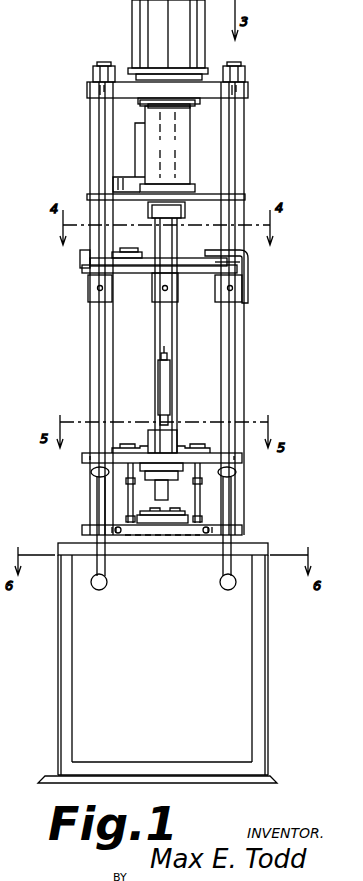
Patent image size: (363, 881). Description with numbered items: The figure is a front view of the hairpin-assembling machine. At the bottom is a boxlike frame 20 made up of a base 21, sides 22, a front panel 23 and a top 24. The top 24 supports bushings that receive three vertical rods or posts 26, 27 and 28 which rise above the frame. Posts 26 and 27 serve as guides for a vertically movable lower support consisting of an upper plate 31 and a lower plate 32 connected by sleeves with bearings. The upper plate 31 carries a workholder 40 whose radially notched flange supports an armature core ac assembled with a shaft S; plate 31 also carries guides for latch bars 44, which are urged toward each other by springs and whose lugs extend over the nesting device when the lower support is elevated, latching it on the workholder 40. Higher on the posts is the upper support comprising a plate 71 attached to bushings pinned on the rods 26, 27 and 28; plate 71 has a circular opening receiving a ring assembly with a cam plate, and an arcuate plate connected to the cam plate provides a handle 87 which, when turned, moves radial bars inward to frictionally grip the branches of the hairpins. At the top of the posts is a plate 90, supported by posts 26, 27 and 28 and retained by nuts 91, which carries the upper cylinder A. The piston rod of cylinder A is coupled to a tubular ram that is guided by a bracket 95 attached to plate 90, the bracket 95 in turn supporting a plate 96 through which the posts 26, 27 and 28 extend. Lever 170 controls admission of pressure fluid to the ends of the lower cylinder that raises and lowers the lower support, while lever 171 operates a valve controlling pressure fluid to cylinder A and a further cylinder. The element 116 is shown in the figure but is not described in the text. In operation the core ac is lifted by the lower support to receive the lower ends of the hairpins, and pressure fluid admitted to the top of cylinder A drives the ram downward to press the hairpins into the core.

The cylinder A is at (132, 13).
The plate 90 is at (87, 90).
The nuts 91 is at (93, 70).
The bracket 95 is at (188, 150).
The plate 96 is at (248, 196).
The lever 116 is at (80, 252).
The handle 87 is at (248, 258).
The plate 71 is at (143, 278).
The post 26 is at (90, 370).
The post 27 is at (240, 358).
The post 28 is at (174, 355).
The shaft S is at (171, 372).
The latch bars 44 is at (134, 447).
The armature core ac is at (179, 438).
The plate 31 is at (243, 458).
The lever 170 is at (96, 490).
The lever 171 is at (232, 490).
The workholder 40 is at (159, 483).
The plate 32 is at (82, 530).
The top 24 is at (256, 543).
The sides 22 is at (58, 674).
The front panel 23 is at (245, 711).
The frame 20 is at (160, 649).
The base 21 is at (278, 782).